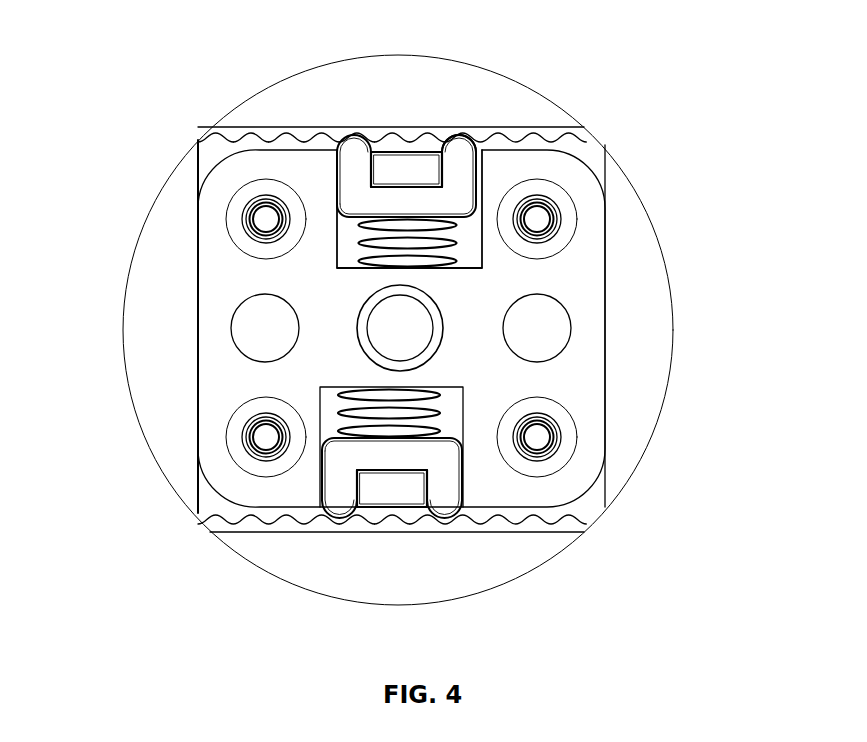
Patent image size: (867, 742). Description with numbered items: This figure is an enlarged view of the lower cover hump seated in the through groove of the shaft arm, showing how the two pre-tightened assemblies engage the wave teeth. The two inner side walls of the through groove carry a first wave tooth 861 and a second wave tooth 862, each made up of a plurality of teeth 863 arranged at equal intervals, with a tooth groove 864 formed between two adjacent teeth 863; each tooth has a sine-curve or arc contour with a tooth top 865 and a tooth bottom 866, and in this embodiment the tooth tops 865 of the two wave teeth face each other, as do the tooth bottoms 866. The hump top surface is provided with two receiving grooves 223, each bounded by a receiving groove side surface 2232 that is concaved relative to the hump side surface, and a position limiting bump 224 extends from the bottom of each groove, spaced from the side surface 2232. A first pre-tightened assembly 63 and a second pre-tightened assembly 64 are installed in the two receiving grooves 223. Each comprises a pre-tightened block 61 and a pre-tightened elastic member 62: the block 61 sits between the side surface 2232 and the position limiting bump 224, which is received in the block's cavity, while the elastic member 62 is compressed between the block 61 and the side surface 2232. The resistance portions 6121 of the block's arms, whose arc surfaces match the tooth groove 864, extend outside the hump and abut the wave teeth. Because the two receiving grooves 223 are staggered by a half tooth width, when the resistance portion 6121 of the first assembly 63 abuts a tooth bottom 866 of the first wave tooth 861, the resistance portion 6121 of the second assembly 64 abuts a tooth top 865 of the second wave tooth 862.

The pre-tightened block 61 is at (463, 177).
The pre-tightened elastic member 62 is at (458, 237).
The first pre-tightened assembly 63 is at (770, 155).
The second pre-tightened assembly 64 is at (770, 395).
The resistance portion 6121 is at (458, 138).
The receiving groove 223 is at (345, 245).
The receiving groove side surface 2232 is at (345, 268).
The position limiting bump 224 is at (400, 172).
The first wave tooth 861 is at (542, 140).
The second wave tooth 862 is at (548, 533).
The tooth 863 is at (271, 140).
The tooth groove 864 is at (252, 138).
The tooth top 865 is at (407, 141).
The tooth bottom 866 is at (357, 135).